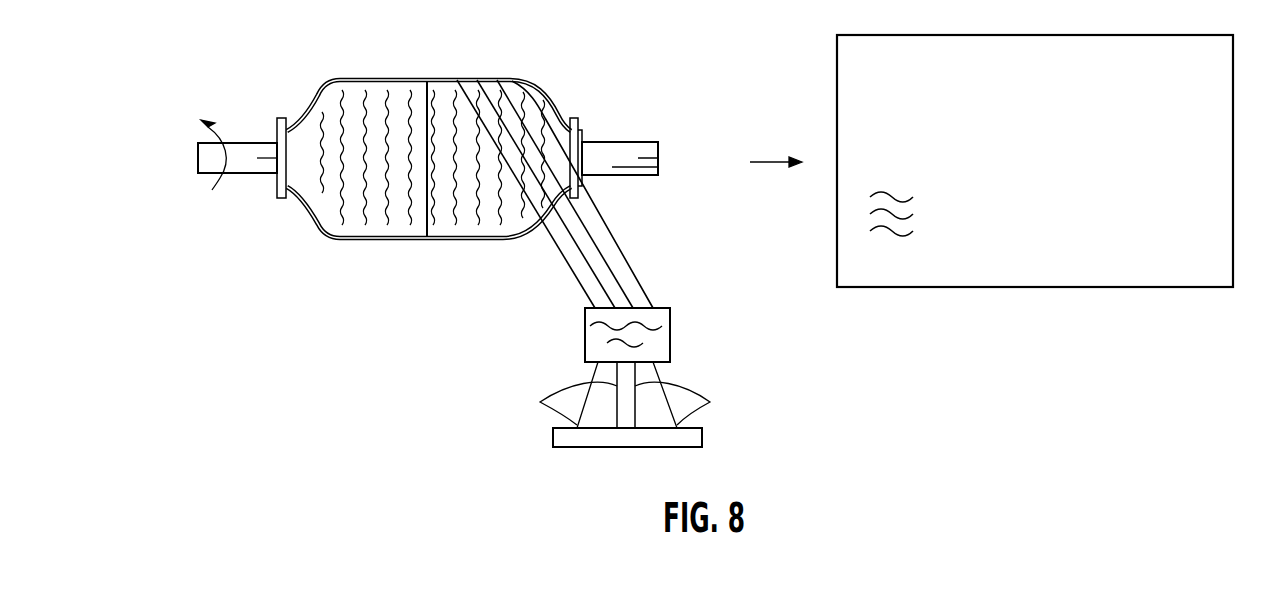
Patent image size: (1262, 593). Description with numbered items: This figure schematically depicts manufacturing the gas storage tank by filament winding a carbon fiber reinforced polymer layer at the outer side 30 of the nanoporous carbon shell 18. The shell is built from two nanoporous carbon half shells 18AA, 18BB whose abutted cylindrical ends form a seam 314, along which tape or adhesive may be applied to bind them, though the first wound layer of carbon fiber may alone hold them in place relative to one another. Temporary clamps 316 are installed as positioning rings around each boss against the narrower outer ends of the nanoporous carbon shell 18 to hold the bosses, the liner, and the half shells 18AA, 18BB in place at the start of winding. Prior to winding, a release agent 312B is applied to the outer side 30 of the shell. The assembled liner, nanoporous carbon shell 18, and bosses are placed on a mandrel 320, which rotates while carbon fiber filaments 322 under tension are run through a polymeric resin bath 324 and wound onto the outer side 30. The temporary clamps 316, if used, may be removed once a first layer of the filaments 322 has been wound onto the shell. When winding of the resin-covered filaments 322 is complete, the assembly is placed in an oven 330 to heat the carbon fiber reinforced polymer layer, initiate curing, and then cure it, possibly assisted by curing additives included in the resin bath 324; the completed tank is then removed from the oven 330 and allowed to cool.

The release agent 312B is at (343, 98).
The seam 314 is at (418, 88).
The outer side 30 is at (485, 77).
The temporary clamps 316 is at (282, 200).
The mandrel 320 is at (208, 173).
The nanoporous carbon shell 18 is at (433, 191).
The nanoporous carbon half shell 18AA is at (346, 234).
The nanoporous carbon half shell 18BB is at (485, 230).
The polymeric resin bath 324 is at (670, 335).
The carbon fiber filaments 322 is at (540, 402).
The oven 330 is at (930, 287).